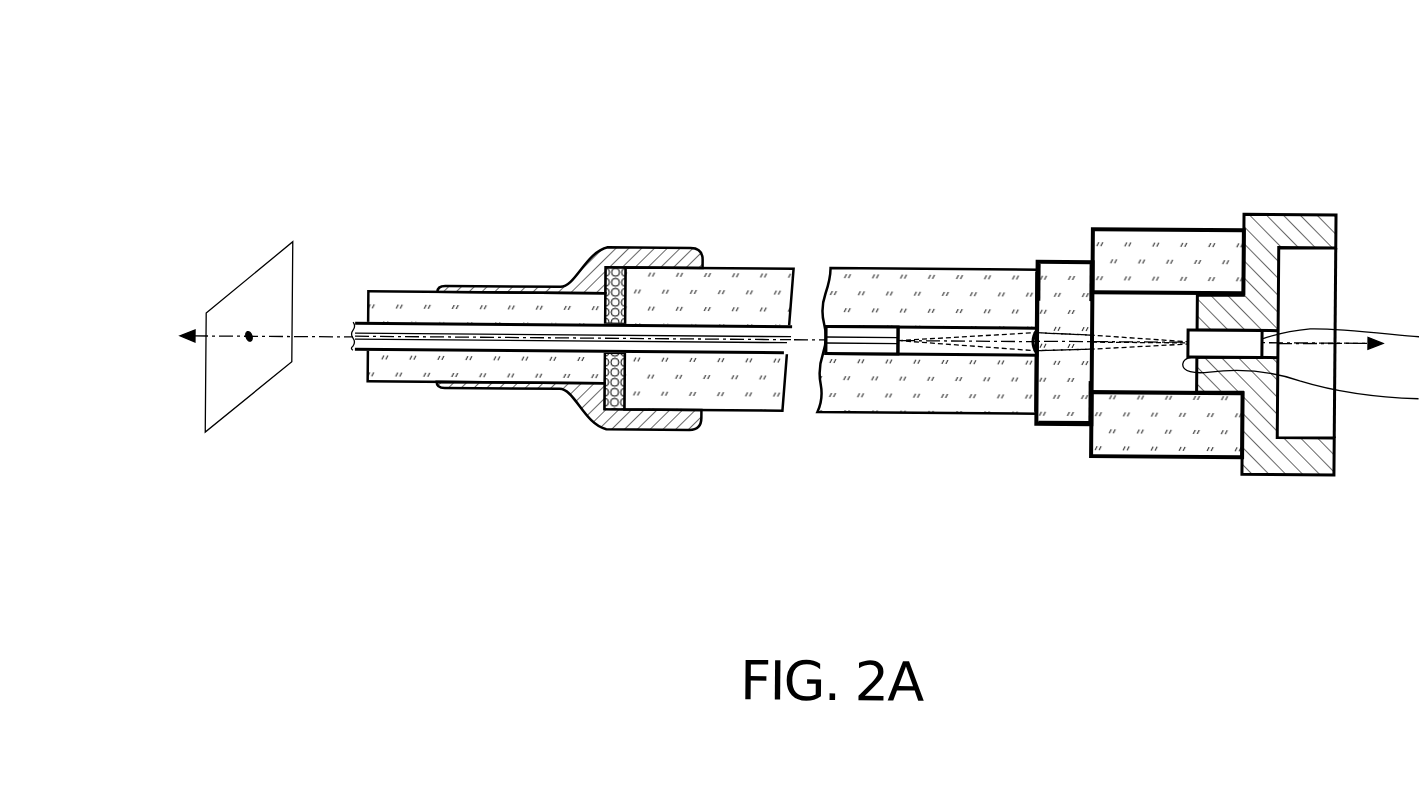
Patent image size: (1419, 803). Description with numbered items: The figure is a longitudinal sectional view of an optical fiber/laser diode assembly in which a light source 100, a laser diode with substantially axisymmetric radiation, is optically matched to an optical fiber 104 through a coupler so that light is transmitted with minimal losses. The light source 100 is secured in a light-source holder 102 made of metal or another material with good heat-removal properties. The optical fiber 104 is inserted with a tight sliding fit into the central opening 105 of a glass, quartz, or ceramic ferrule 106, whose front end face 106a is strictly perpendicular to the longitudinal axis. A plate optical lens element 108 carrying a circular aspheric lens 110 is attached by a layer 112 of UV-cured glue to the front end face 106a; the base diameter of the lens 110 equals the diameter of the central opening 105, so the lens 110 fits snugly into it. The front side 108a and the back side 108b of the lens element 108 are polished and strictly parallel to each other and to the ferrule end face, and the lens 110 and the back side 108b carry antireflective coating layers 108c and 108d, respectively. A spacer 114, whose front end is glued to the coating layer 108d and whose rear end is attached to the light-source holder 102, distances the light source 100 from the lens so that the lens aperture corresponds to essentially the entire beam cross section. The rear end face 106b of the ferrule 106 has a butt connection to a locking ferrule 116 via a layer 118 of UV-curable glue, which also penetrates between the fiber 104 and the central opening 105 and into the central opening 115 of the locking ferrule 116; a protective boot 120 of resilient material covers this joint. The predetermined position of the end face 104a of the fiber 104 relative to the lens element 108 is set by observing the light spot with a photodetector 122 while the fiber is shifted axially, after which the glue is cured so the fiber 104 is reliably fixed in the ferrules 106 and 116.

The light source 100 is at (1173, 311).
The light-source holder 102 is at (1284, 214).
The optical fiber 104 is at (361, 330).
The end face of the fiber 104a is at (844, 371).
The central opening of the ferrule 105 is at (911, 329).
The ferrule 106 is at (928, 288).
The front end face of the ferrule 106a is at (1033, 271).
The rear end face of the ferrule 106b is at (638, 295).
The plate optical lens element 108 is at (1083, 313).
The front side of the lens element 108a is at (1049, 392).
The back side of the lens element 108b is at (1083, 394).
The antireflective coating layer 108c is at (1037, 261).
The antireflective coating layer 108d is at (1088, 257).
The circular aspheric lens 110 is at (1028, 364).
The layer of UV-cured glue 112 is at (1065, 395).
The spacer 114 is at (1185, 228).
The central opening of the locking ferrule 115 is at (404, 357).
The locking ferrule 116 is at (422, 319).
The layer of UV-curable glue 118 is at (623, 414).
The protective boot 120 is at (575, 273).
The photodetector 122 is at (250, 340).